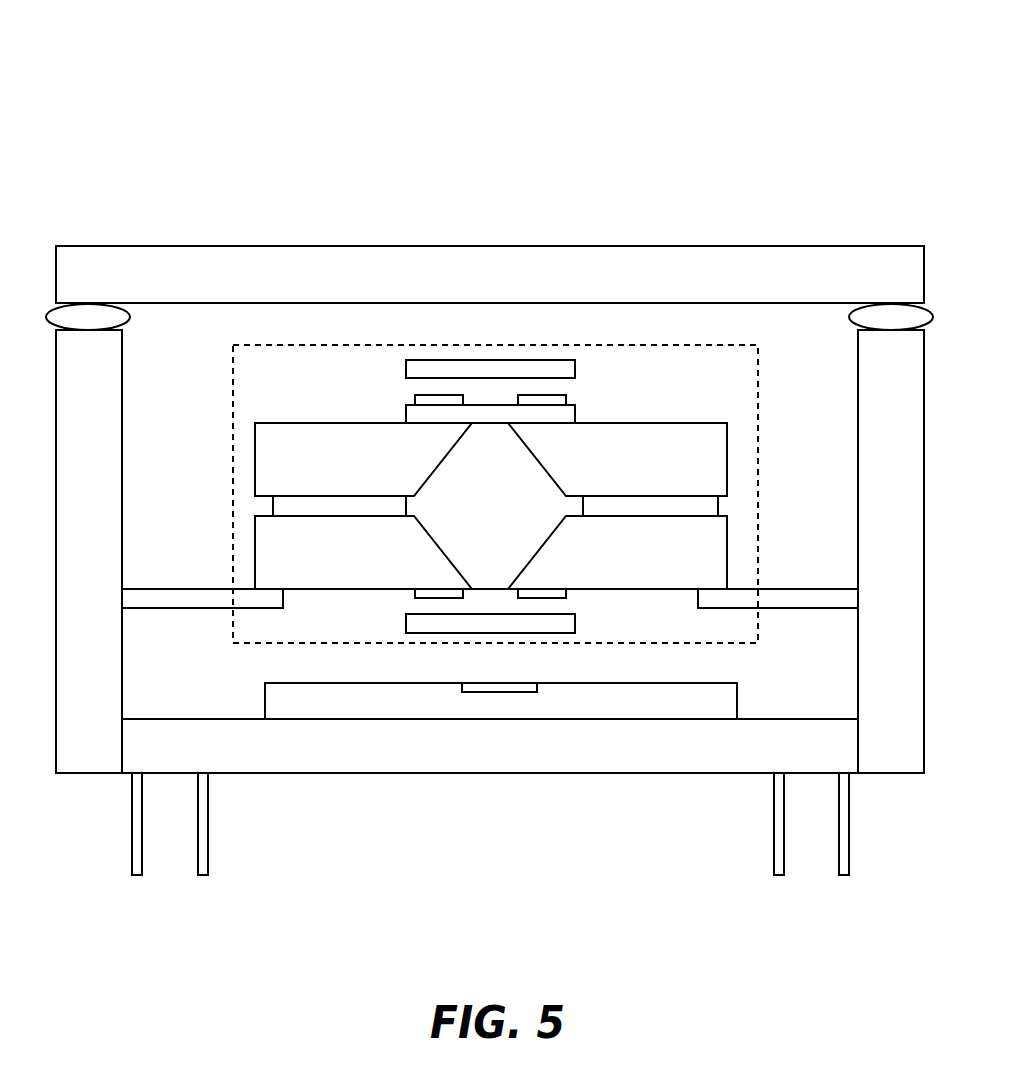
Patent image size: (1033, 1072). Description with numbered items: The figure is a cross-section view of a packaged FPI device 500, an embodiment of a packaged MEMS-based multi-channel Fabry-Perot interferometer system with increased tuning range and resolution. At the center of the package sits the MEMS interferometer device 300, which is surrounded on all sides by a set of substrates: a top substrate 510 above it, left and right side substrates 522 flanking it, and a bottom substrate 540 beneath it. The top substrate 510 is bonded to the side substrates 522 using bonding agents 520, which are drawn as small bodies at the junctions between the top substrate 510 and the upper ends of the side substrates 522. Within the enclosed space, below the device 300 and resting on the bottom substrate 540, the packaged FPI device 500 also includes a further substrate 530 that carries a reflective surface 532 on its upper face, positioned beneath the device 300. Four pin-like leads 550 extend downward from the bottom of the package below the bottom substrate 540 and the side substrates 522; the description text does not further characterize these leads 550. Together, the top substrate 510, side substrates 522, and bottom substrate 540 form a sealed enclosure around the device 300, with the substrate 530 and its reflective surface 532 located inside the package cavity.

The packaged FPI device 500 is at (733, 118).
The top substrate 510 is at (510, 285).
The bonding agents 520 is at (130, 318).
The side substrates 522 is at (110, 550).
The device 300 is at (510, 520).
The substrate 530 is at (670, 711).
The reflective surface 532 is at (498, 682).
The bottom substrate 540 is at (518, 760).
The leads / pins 550 is at (134, 843).